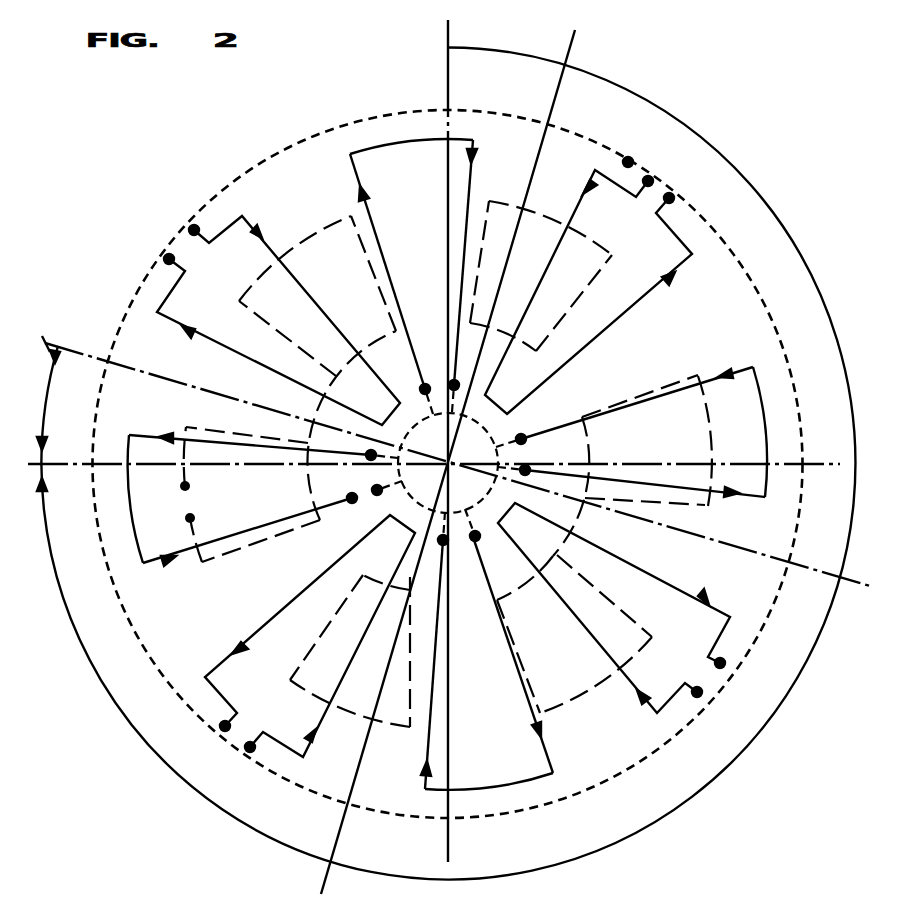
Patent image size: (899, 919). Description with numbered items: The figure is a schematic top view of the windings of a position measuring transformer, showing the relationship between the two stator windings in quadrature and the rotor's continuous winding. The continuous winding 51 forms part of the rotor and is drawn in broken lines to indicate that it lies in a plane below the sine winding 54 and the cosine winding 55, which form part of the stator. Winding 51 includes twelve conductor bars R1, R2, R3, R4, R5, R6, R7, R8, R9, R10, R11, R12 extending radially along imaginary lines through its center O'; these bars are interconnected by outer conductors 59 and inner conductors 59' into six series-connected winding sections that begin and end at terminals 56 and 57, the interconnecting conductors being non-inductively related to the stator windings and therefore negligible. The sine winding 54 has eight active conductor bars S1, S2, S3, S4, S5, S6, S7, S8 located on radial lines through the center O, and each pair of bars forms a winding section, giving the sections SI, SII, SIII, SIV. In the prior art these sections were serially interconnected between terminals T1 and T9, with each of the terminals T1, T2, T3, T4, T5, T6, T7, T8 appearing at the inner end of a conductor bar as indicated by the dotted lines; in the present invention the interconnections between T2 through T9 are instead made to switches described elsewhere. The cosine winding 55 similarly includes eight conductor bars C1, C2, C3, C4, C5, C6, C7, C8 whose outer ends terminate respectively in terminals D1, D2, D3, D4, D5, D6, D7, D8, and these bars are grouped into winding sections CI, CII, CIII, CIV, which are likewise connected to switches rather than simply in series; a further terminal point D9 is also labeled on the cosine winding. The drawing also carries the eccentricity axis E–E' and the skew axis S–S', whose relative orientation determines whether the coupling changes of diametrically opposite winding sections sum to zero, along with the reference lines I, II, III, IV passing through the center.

The continuous winding 51 is at (510, 206).
The sine winding 54 is at (395, 141).
The cosine winding 55 is at (607, 166).
The terminal 56 is at (191, 486).
The terminal 57 is at (195, 518).
The outer conductors 59 is at (351, 400).
The inner conductors 59' is at (604, 527).
The terminal D1 is at (165, 261).
The terminal D2 is at (197, 226).
The terminal D3 is at (650, 178).
The terminal D4 is at (673, 197).
The terminal D5 is at (726, 664).
The terminal D6 is at (698, 697).
The terminal D7 is at (250, 752).
The terminal D8 is at (222, 731).
The diode D9 is at (629, 158).
The terminal T1 is at (348, 496).
The terminal T2 is at (376, 452).
The terminal T3 is at (421, 387).
The terminal T4 is at (457, 381).
The terminal T5 is at (522, 438).
The terminal T6 is at (527, 473).
The terminal T7 is at (480, 540).
The terminal T8 is at (441, 545).
The terminal T9 is at (374, 495).
The conductor bar S1 is at (158, 568).
The conductor bar S2 is at (160, 432).
The conductor bar S3 is at (348, 160).
The conductor bar S4 is at (473, 160).
The conductor bar S5 is at (737, 372).
The conductor bar S6 is at (752, 500).
The conductor bar S7 is at (552, 748).
The conductor bar S8 is at (422, 764).
The conductor bar C1 is at (193, 336).
The conductor bar C2 is at (260, 232).
The conductor bar C3 is at (580, 195).
The conductor bar C4 is at (680, 272).
The conductor bar C5 is at (716, 604).
The conductor bar C6 is at (640, 698).
The conductor bar C7 is at (312, 738).
The conductor bar C8 is at (228, 655).
The conductor bar R1 is at (205, 428).
The conductor bar R2 is at (284, 336).
The conductor bar R3 is at (362, 256).
The conductor bar R4 is at (512, 236).
The conductor bar R5 is at (578, 300).
The conductor bar R6 is at (658, 388).
The conductor bar R7 is at (695, 503).
The conductor bar R8 is at (620, 612).
The conductor bar R9 is at (528, 666).
The conductor bar R10 is at (386, 672).
The conductor bar R11 is at (306, 620).
The conductor bar R12 is at (280, 542).
The winding section SI is at (249, 499).
The winding section SII is at (407, 260).
The winding section SIII is at (646, 429).
The winding section SIV is at (488, 663).
The winding section CI is at (242, 299).
The winding section CII is at (606, 278).
The winding section CIII is at (644, 628).
The winding section CIV is at (296, 659).
The center O is at (448, 463).
The center O' is at (462, 483).
The skew axis S is at (472, 433).
The skew axis S' is at (471, 848).
The eccentricity axis E is at (425, 446).
The eccentricity axis E' is at (833, 484).
The section line I is at (47, 340).
The section line II is at (451, 449).
The section line III is at (862, 607).
The section line IV is at (320, 909).